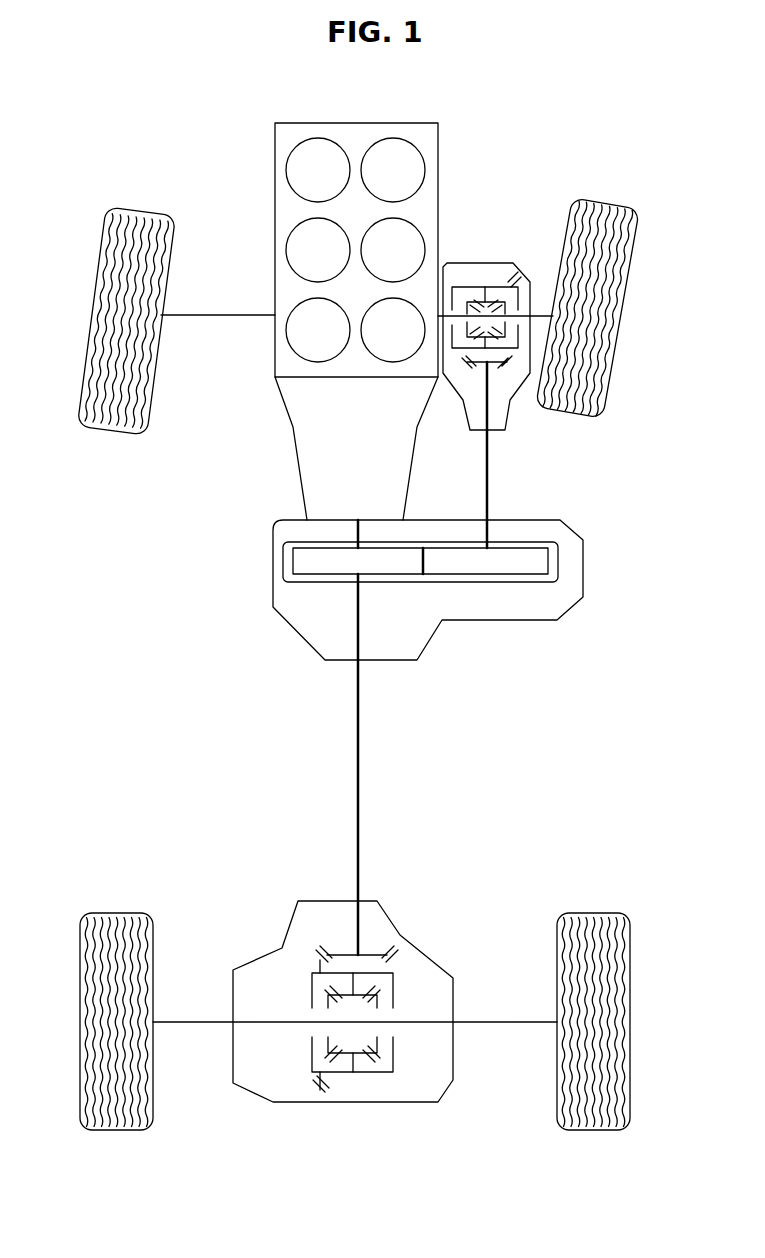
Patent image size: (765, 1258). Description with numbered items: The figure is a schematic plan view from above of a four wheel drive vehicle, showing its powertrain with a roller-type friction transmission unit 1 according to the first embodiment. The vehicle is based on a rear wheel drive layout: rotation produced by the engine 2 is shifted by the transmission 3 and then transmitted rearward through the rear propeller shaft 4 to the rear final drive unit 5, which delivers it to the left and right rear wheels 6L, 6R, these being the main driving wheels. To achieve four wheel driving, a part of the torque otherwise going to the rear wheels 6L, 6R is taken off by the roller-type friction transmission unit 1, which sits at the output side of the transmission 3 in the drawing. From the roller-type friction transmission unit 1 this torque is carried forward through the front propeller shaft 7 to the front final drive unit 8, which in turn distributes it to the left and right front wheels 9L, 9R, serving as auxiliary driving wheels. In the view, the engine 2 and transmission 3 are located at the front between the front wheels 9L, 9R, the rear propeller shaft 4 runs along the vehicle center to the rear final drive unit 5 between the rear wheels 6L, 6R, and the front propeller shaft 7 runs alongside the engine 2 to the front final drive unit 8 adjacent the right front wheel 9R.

The roller-type friction transmission unit 1 is at (583, 561).
The engine 2 is at (275, 138).
The transmission 3 is at (293, 427).
The rear propeller shaft 4 is at (360, 749).
The rear final drive unit 5 is at (421, 950).
The left rear wheel 6L is at (97, 1131).
The right rear wheel 6R is at (603, 1131).
The front propeller shaft 7 is at (493, 493).
The front final drive unit 8 is at (490, 262).
The left front wheel 9L is at (107, 210).
The right front wheel 9R is at (599, 204).